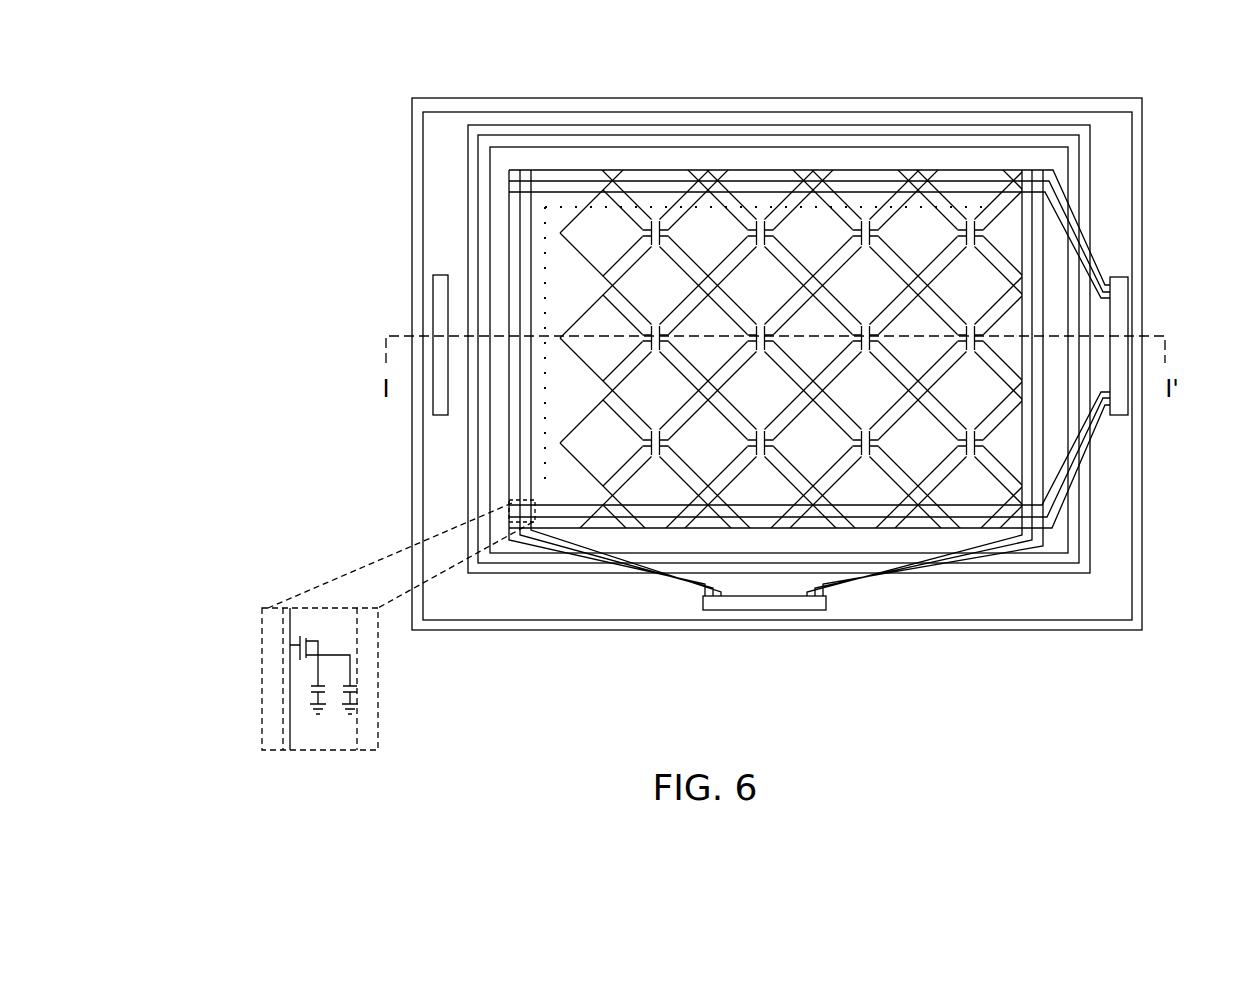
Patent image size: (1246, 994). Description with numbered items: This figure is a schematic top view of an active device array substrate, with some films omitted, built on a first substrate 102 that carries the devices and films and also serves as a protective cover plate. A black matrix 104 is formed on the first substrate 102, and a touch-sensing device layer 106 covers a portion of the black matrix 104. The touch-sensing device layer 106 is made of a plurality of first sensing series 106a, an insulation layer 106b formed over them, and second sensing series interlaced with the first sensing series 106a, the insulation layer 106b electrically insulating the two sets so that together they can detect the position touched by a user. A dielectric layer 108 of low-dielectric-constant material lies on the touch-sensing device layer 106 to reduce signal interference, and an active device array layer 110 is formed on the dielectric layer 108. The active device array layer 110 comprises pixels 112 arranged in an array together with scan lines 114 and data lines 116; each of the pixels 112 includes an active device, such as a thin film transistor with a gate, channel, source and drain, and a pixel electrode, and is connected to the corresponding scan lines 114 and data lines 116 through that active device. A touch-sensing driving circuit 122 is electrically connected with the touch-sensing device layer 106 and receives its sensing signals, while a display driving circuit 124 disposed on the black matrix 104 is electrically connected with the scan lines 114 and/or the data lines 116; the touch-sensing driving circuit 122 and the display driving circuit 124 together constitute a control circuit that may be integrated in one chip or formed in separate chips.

The first substrate 102 is at (1030, 104).
The black matrix 104 is at (985, 118).
The touch-sensing device layer 106 is at (920, 130).
The first sensing series 106a is at (816, 365).
The insulation layer 106b is at (868, 488).
The dielectric layer 108 is at (862, 140).
The active device array layer 110 is at (816, 152).
The pixels 112 is at (509, 500).
The scan lines 114 is at (655, 192).
The data lines 116 is at (529, 255).
The touch-sensing driving circuit 122 is at (433, 305).
The display driving circuit 124 is at (1128, 320).